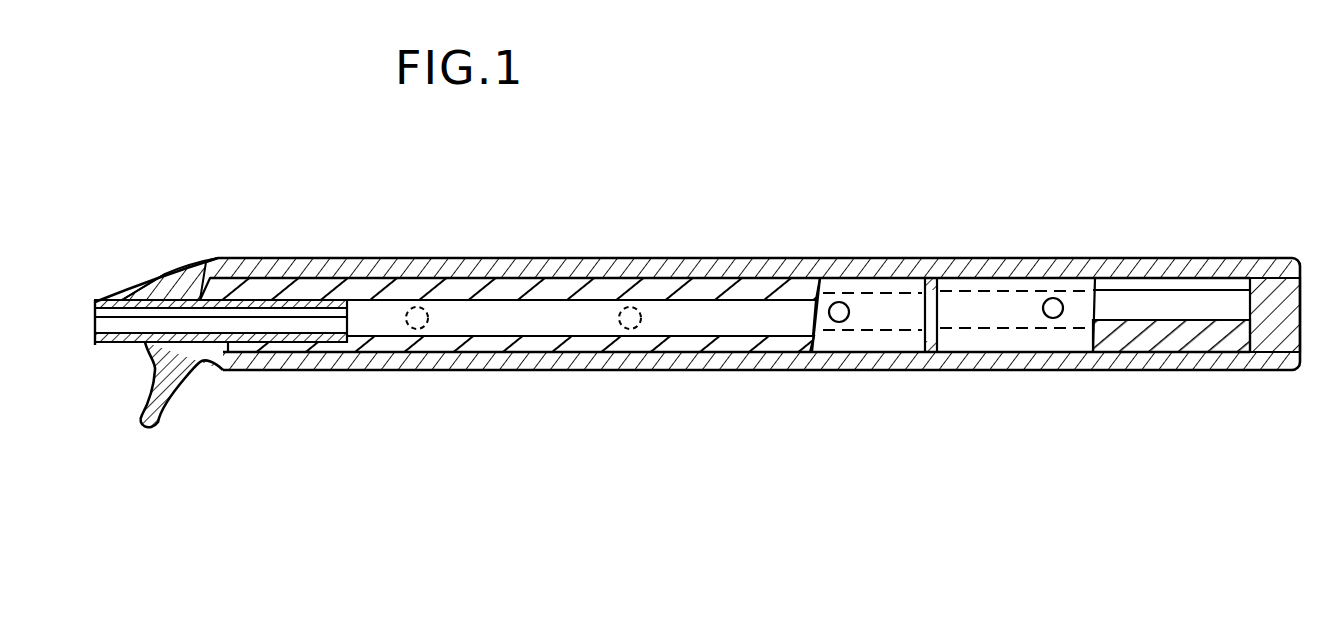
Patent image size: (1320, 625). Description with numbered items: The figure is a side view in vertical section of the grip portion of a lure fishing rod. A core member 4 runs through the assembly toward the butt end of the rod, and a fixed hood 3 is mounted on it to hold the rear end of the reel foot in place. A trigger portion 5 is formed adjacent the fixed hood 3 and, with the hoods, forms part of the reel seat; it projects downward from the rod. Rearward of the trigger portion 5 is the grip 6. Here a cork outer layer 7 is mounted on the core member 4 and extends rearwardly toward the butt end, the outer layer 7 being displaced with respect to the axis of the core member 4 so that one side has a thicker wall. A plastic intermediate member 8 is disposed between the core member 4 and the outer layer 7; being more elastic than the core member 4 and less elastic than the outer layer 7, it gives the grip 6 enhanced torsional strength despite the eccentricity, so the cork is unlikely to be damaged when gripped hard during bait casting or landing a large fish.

The fixed hood 3 is at (185, 267).
The core member 4 is at (528, 320).
The trigger portion 5 is at (153, 425).
The grip 6 is at (808, 250).
The cork outer layer 7 is at (683, 262).
The plastic intermediate member 8 is at (503, 291).